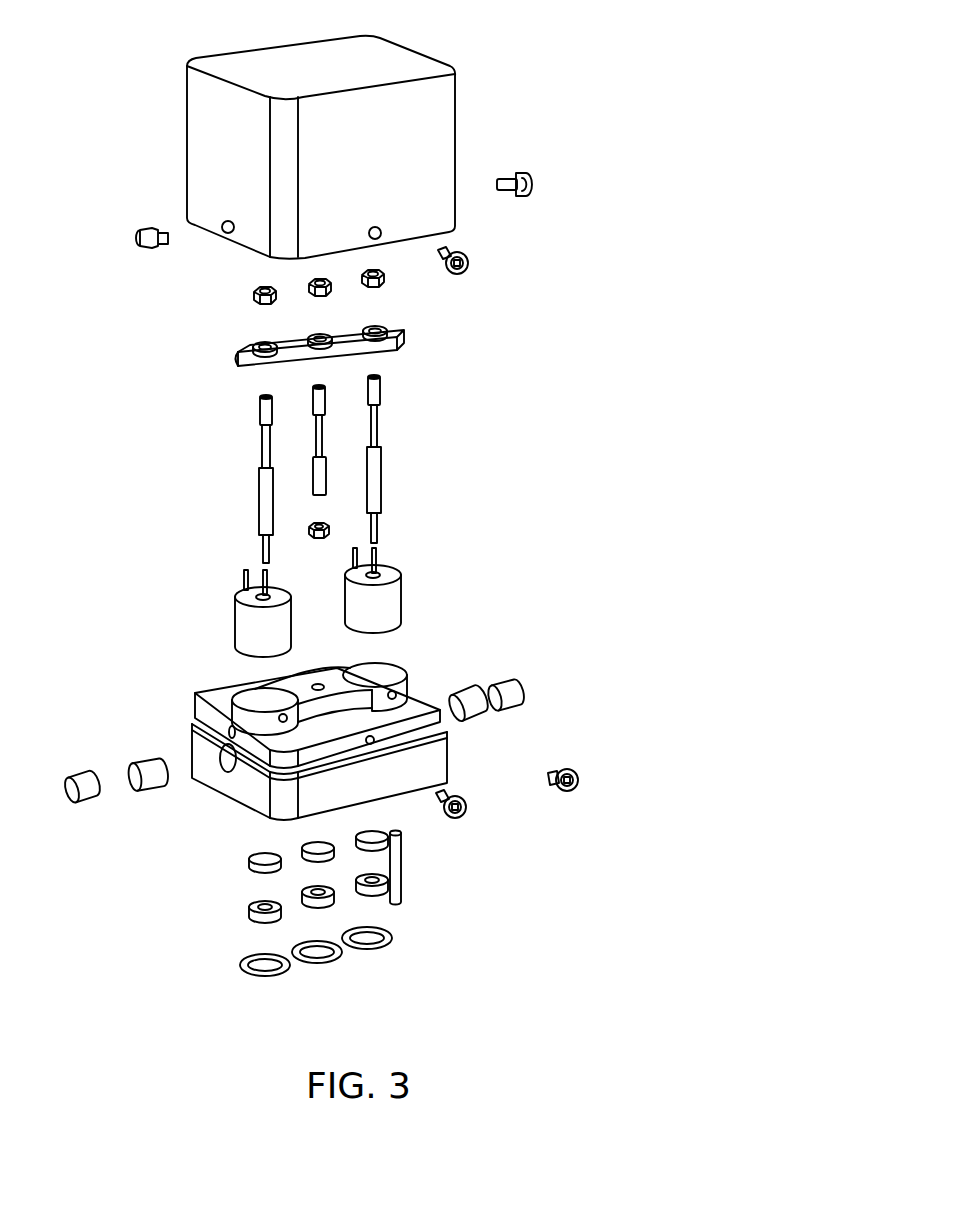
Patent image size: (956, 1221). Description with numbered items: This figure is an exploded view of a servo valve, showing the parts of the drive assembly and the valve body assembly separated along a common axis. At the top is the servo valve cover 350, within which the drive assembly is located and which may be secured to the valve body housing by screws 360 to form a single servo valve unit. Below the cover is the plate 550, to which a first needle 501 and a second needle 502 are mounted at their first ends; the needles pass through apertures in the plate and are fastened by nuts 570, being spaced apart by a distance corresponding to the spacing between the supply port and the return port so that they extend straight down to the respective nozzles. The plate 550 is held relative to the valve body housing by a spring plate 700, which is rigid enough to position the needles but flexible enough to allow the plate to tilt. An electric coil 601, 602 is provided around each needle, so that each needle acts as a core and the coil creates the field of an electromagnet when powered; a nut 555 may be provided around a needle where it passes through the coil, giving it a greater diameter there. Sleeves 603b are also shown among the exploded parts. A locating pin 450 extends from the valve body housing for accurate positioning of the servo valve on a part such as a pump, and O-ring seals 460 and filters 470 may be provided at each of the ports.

The servo valve cover 350 is at (217, 124).
The screws 360 is at (541, 182).
The nuts 570 is at (247, 293).
The plate 550 is at (244, 349).
The first needle 501 is at (254, 419).
The second needle 502 is at (389, 459).
The spring plate 700 is at (335, 440).
The nut 555 is at (252, 488).
The electric coil 601 is at (231, 611).
The electric coil 602 is at (407, 601).
The sleeve 603b is at (520, 691).
The filters 470 is at (251, 857).
The locating pin 450 is at (407, 862).
The O-ring seals 460 is at (402, 940).